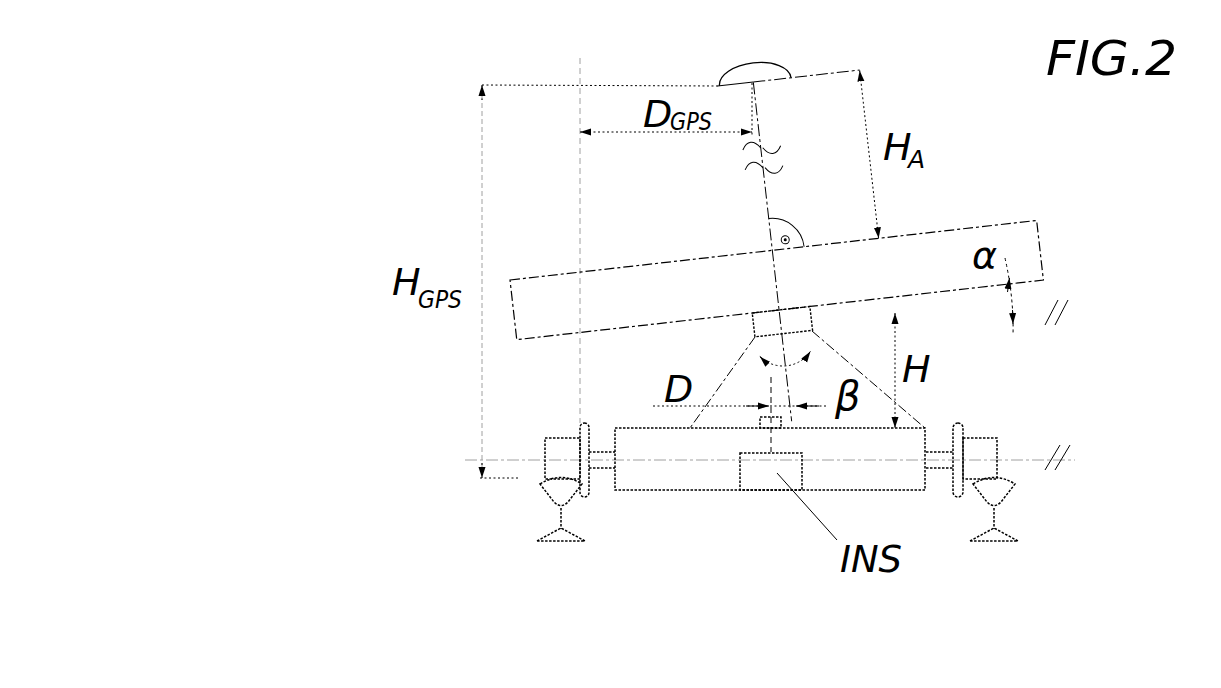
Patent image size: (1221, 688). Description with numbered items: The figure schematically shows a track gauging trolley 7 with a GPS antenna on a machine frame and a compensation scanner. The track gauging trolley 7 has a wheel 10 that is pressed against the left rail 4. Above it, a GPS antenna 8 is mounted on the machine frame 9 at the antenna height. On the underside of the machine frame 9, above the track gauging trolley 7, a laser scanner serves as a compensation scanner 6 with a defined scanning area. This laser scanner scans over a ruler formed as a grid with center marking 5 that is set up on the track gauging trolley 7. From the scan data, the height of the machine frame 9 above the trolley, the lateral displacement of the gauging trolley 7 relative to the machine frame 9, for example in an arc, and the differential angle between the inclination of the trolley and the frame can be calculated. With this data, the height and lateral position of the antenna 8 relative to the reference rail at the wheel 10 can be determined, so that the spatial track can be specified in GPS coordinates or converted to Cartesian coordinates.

The left rail 4 is at (555, 490).
The grid with center marking 5 is at (763, 428).
The compensation scanner 6 is at (770, 325).
The track gauging trolley 7 is at (887, 507).
The GPS antenna 8 is at (743, 73).
The machine frame 9 is at (647, 285).
The wheel 10 is at (588, 490).